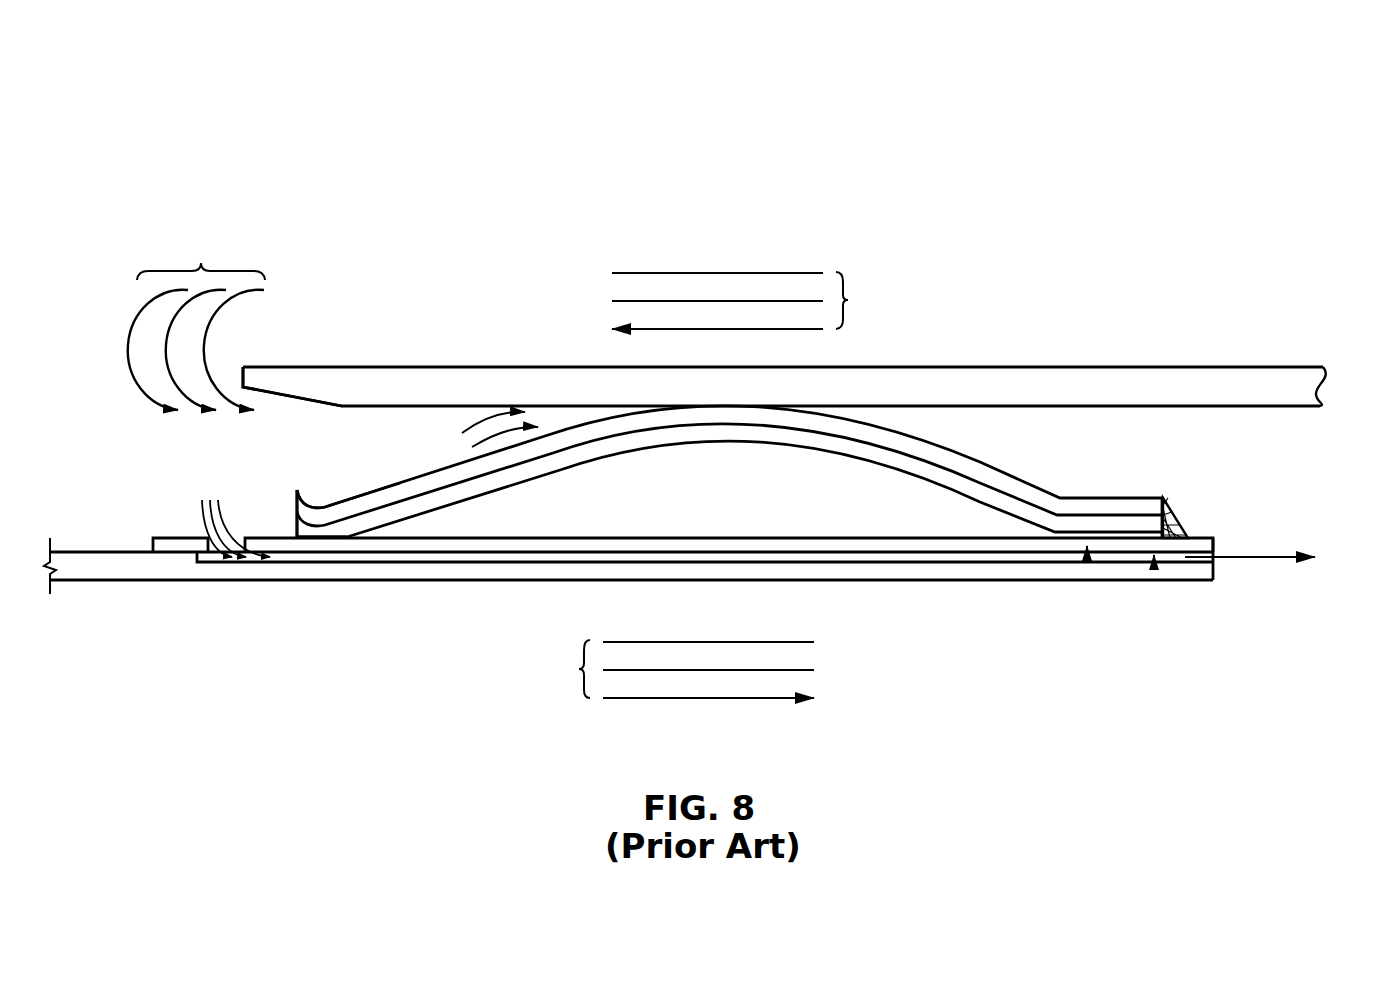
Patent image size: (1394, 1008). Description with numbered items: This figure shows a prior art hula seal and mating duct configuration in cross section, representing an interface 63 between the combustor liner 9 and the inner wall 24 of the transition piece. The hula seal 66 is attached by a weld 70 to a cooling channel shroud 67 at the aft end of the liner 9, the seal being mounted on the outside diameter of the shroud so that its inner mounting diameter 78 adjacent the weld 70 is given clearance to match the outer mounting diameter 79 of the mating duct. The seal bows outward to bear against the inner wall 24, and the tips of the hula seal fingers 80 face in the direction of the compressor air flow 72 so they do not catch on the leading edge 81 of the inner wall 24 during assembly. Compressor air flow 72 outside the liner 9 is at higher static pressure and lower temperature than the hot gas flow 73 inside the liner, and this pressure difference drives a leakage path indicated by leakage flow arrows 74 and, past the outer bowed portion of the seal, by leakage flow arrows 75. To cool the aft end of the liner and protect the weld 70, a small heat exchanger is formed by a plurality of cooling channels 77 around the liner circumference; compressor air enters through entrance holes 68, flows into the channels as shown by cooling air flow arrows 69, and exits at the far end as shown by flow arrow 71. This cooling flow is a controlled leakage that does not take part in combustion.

The interface 63 is at (150, 140).
The combustor liner 9 is at (115, 570).
The inner wall of transition piece 24 is at (387, 405).
The hula seal 66 is at (1022, 488).
The cooling channel shroud 67 is at (1203, 544).
The entrance holes 68 is at (207, 546).
The cooling air flow arrows 69 is at (224, 489).
The weld 70 is at (1178, 520).
The flow arrow 71 is at (1306, 549).
The compressor air flow 72 is at (750, 300).
The hot gas flow 73 is at (678, 669).
The leakage flow arrows 74 is at (196, 320).
The leakage flow arrows 75 is at (454, 426).
The cooling channels 77 is at (480, 563).
The inner mounting diameter 78 is at (1087, 553).
The outer mounting diameter 79 is at (1154, 562).
The hula seal fingers 80 is at (320, 507).
The leading edge 81 is at (265, 378).